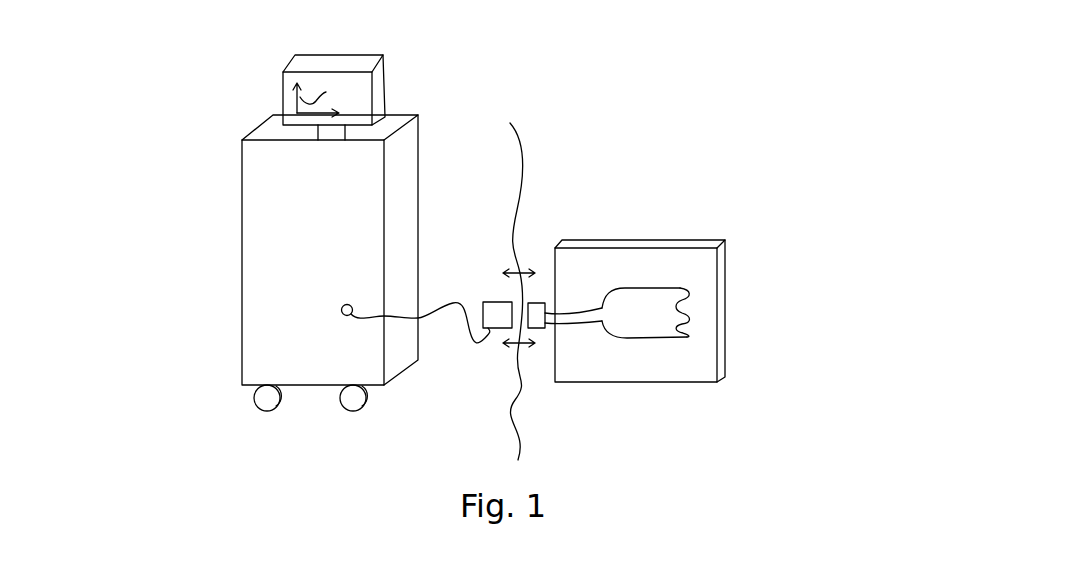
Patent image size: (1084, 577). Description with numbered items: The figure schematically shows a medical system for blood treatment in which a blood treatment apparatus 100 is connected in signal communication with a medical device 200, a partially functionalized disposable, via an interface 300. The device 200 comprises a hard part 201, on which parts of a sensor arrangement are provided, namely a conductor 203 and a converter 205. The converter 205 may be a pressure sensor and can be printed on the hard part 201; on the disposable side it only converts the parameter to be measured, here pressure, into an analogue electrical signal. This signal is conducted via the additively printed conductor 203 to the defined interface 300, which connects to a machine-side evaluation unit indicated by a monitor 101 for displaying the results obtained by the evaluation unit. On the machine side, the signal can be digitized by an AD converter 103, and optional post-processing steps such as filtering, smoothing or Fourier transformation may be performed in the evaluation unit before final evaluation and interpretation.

The blood treatment apparatus 100 is at (292, 226).
The monitor 101 is at (350, 90).
The AD converter 103 is at (500, 315).
The medical device 200 is at (686, 257).
The hard part 201 is at (727, 285).
The conductor 203 is at (721, 366).
The converter 205 is at (688, 335).
The interface 300 is at (524, 273).